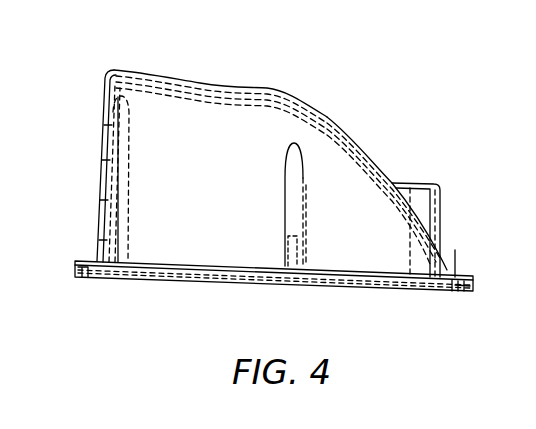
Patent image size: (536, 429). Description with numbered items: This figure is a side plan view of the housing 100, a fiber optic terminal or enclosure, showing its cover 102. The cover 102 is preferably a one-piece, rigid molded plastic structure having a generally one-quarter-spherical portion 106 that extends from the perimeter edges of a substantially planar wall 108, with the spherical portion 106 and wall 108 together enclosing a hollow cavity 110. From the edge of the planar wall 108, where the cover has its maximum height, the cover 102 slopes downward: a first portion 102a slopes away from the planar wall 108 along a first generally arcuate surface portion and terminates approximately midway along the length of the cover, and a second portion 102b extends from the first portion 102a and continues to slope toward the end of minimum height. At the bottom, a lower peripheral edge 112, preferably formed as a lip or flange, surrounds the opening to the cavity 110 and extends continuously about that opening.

The housing 100 is at (380, 30).
The cover 102 is at (303, 98).
The first portion of the housing cover 102a is at (197, 82).
The second portion of the housing cover 102b is at (343, 142).
The one-quarter-spherical portion 106 is at (188, 108).
The substantially planar wall 108 is at (105, 107).
The hollow cavity 110 is at (240, 103).
The lower peripheral edge 112 is at (430, 284).